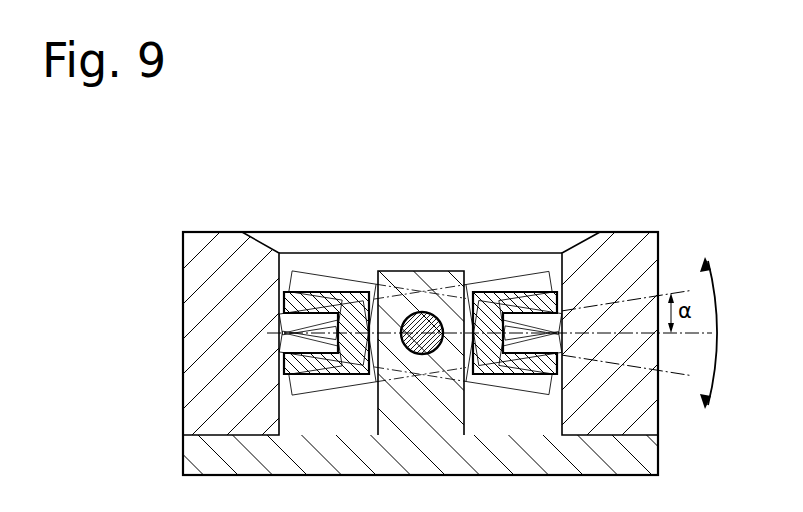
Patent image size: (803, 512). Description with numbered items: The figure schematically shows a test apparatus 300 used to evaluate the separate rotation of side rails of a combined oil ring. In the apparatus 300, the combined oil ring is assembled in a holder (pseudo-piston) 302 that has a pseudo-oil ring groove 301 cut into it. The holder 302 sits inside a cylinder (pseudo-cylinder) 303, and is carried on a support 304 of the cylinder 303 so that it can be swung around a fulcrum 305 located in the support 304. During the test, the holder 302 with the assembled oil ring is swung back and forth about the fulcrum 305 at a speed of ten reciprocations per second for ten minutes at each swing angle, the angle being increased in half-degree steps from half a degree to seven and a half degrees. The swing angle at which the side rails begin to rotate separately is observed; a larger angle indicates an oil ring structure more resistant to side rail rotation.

The apparatus 300 is at (547, 161).
The pseudo-oil ring groove 301 is at (532, 316).
The holder (piston) 302 is at (487, 295).
The cylinder (pseudo-cylinder) 303 is at (228, 243).
The support 304 is at (401, 273).
The fulcrum 305 is at (423, 311).